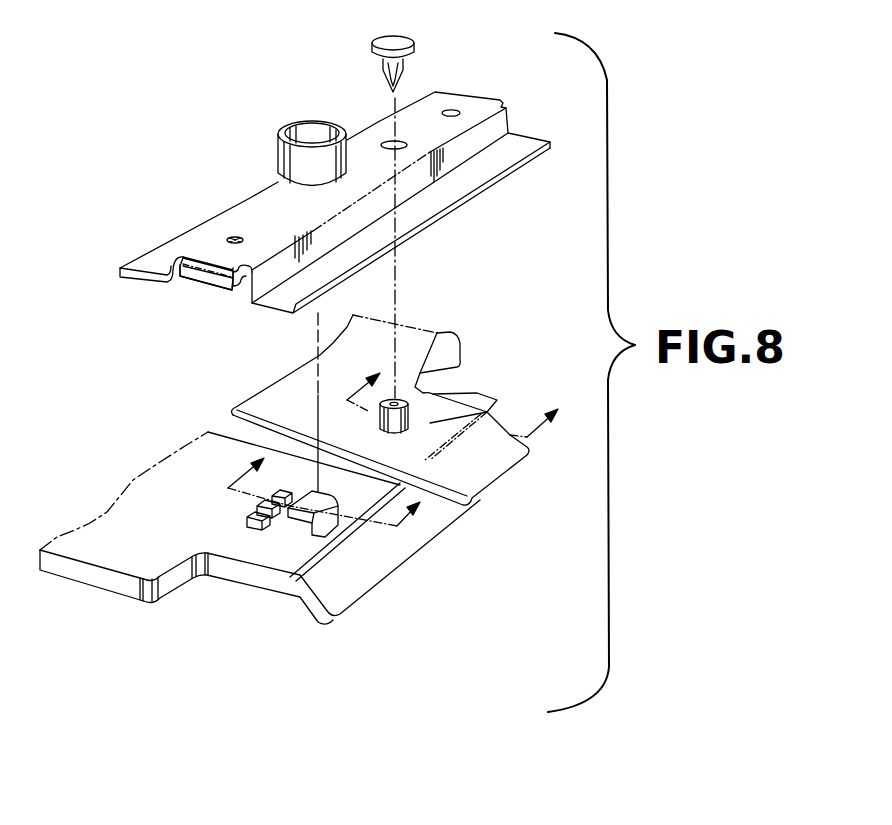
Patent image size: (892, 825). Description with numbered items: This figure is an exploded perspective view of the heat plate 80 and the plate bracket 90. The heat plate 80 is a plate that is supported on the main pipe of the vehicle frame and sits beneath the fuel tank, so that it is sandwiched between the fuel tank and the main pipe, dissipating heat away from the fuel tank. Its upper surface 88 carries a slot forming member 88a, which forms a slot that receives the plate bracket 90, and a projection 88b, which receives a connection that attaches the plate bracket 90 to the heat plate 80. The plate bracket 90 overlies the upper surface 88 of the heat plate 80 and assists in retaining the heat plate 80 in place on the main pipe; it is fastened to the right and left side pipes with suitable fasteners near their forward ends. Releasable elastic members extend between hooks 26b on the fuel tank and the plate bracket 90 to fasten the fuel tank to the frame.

The plate bracket 90 is at (465, 195).
The hooks 26b is at (218, 293).
The upper surface 88 is at (428, 346).
The slot forming member 88a is at (330, 512).
The projection 88b is at (440, 402).
The heat plate 80 is at (222, 583).